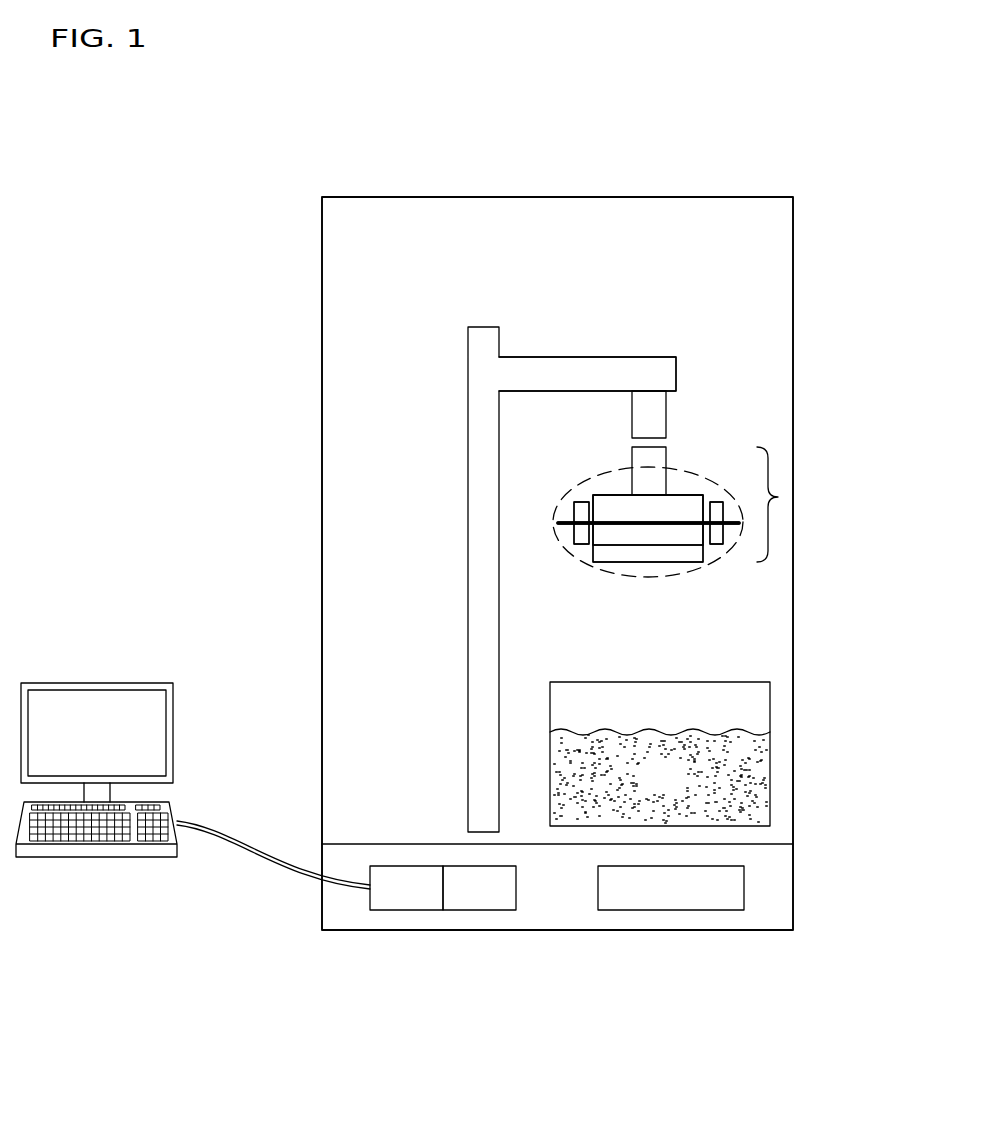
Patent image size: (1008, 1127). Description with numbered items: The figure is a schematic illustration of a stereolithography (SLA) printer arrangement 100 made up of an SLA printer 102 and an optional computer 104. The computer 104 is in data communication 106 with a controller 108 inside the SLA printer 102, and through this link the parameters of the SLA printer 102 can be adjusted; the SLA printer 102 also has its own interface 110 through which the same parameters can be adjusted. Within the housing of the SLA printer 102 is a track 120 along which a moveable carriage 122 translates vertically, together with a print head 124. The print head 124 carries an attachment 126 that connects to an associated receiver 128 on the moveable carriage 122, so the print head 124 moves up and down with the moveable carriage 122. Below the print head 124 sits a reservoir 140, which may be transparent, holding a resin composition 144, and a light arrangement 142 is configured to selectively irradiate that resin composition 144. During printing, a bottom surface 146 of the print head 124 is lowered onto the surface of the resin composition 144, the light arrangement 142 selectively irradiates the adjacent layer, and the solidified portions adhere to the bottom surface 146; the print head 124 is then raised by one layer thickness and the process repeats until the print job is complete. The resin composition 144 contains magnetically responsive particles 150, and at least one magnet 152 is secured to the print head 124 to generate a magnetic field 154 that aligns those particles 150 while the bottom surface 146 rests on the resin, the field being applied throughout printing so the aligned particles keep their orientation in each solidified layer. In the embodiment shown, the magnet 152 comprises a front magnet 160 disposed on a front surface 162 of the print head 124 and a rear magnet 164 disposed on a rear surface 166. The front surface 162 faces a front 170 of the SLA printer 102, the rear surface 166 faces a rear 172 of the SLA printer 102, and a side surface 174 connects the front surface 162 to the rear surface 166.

The stereolithography (SLA) printer arrangement 100 is at (121, 182).
The SLA printer 102 is at (646, 176).
The computer 104 is at (173, 722).
The data communication 106 is at (258, 860).
The controller 108 is at (409, 890).
The interface 110 is at (483, 890).
The track 120 is at (468, 565).
The moveable carriage 122 is at (580, 357).
The print head 124 is at (778, 497).
The attachment 126 is at (631, 456).
The receiver 128 is at (631, 420).
The reservoir 140 is at (771, 700).
The light arrangement 142 is at (671, 890).
The resin composition 144 is at (678, 788).
The bottom surface 146 is at (670, 562).
The magnetically responsive particles 150 is at (750, 778).
The magnet 152 is at (648, 523).
The magnetic field 154 is at (593, 573).
The front magnet 160 is at (713, 502).
The front surface 162 is at (716, 550).
The rear magnet 164 is at (574, 503).
The rear surface 166 is at (593, 553).
The front 170 is at (804, 247).
The rear 172 is at (312, 249).
The side surface 174 is at (637, 532).